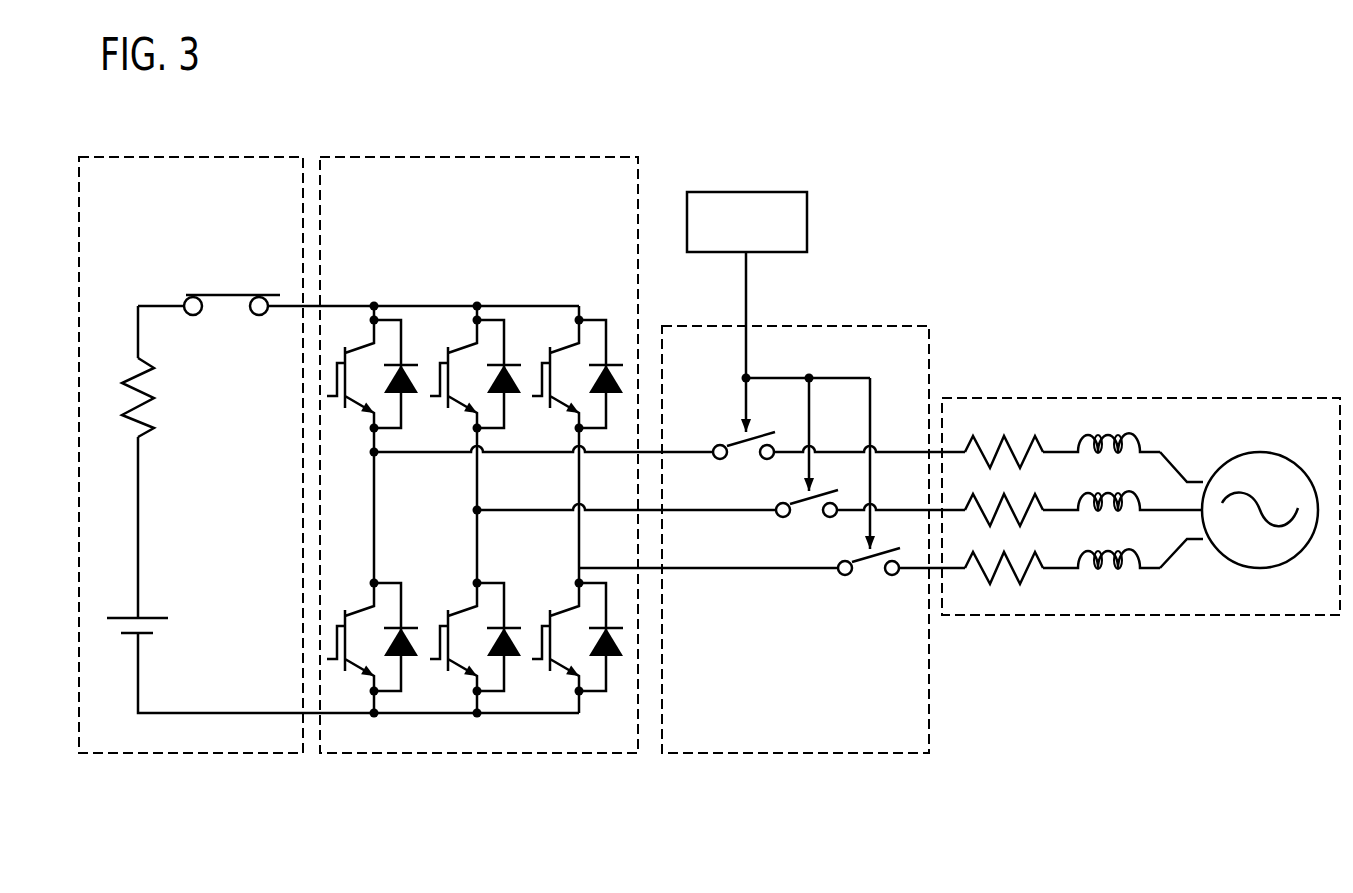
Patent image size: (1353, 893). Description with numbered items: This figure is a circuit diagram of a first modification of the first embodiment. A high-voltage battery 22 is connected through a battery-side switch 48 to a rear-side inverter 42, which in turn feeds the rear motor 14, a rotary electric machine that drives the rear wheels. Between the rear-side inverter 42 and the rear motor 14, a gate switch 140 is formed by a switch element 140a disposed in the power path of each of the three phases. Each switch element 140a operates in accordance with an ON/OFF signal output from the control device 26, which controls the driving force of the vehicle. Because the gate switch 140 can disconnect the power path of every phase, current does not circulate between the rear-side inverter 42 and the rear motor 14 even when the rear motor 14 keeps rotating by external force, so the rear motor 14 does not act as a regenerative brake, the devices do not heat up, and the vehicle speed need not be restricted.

The battery 22 is at (188, 157).
The battery-side switch 48 is at (226, 295).
The rear-side inverter 42 is at (425, 157).
The control device 26 is at (807, 224).
The gate switch 140 is at (813, 512).
The switch element 140a is at (868, 555).
The rear motor 14 is at (1125, 398).